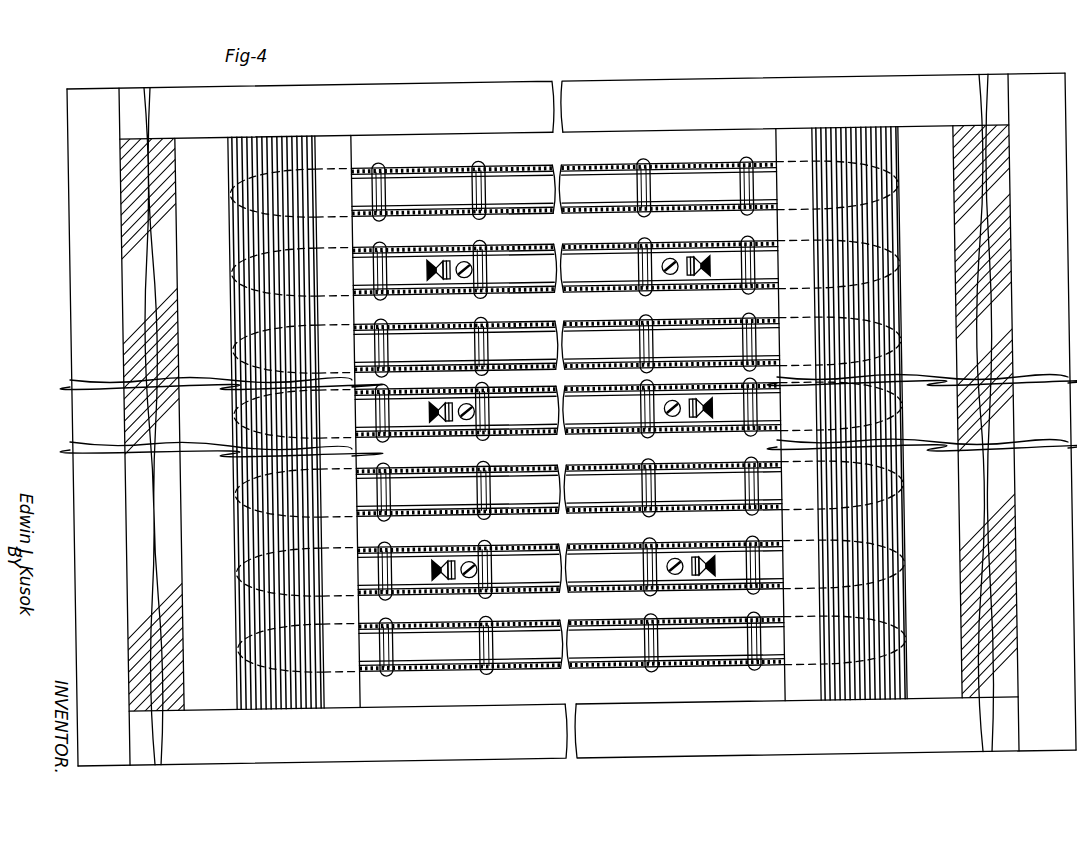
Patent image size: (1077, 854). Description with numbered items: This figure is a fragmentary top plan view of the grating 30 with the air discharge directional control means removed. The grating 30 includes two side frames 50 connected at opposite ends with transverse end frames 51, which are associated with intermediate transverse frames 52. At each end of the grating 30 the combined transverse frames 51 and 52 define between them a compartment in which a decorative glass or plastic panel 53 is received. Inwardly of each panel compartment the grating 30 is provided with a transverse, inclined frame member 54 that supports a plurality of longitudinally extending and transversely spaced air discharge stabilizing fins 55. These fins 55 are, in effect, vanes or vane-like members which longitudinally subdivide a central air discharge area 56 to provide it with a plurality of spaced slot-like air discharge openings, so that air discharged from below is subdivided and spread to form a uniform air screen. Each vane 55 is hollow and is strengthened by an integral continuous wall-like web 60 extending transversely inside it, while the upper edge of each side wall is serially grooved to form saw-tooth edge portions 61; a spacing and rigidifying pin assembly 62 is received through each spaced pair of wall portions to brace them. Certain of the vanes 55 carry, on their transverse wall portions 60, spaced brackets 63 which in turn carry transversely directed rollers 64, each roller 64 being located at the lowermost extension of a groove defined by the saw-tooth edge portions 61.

The grating 30 is at (864, 61).
The side frame 50 is at (548, 82).
The transverse end frame 51 is at (75, 161).
The intermediate transverse frame 52 is at (205, 150).
The decorative glass or plastic panel 53 is at (151, 141).
The transverse inclined frame member 54 is at (283, 148).
The air discharge stabilizing fin 55 is at (712, 208).
The central air discharge area 56 is at (618, 136).
The web 60 is at (576, 268).
The saw-tooth edge portion 61 is at (405, 172).
The spacing and rigidifying pin assembly 62 is at (470, 192).
The bracket 63 is at (462, 263).
The roller 64 is at (427, 267).